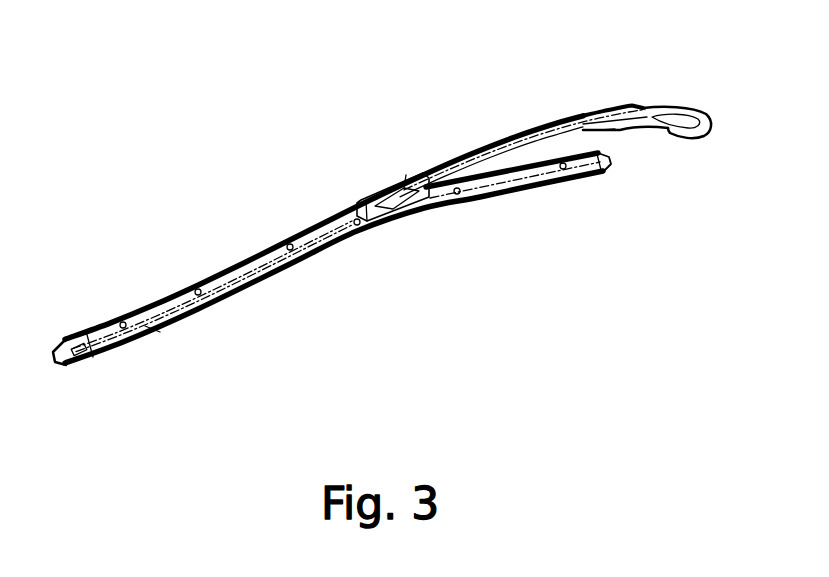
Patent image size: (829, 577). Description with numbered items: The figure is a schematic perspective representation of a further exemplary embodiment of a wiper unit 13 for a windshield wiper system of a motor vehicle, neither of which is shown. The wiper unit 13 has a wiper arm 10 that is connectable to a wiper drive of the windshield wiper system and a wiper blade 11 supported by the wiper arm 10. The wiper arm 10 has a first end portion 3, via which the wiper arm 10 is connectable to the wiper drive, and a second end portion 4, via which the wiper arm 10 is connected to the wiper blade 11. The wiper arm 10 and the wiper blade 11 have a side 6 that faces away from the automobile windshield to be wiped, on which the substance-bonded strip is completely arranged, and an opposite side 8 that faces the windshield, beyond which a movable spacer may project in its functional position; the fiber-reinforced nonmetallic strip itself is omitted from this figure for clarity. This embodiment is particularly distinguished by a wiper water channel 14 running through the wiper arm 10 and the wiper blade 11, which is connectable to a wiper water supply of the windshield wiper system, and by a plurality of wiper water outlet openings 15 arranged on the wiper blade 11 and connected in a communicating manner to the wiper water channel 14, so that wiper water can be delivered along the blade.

The first end portion 3 is at (693, 139).
The second end portion 4 is at (378, 200).
The side 6 is at (144, 301).
The side 8 is at (147, 328).
The wiper arm 10 is at (518, 231).
The wiper blade 11 is at (323, 266).
The wiper unit 13 is at (247, 108).
The wiper water channel 14 is at (279, 246).
The wiper water outlet openings 15 is at (462, 203).